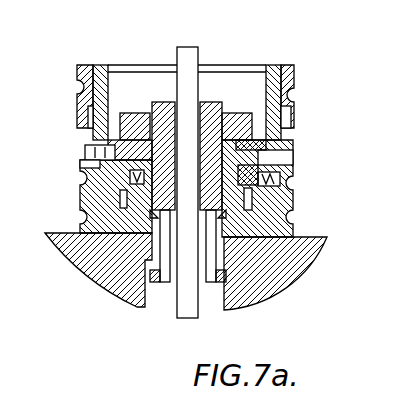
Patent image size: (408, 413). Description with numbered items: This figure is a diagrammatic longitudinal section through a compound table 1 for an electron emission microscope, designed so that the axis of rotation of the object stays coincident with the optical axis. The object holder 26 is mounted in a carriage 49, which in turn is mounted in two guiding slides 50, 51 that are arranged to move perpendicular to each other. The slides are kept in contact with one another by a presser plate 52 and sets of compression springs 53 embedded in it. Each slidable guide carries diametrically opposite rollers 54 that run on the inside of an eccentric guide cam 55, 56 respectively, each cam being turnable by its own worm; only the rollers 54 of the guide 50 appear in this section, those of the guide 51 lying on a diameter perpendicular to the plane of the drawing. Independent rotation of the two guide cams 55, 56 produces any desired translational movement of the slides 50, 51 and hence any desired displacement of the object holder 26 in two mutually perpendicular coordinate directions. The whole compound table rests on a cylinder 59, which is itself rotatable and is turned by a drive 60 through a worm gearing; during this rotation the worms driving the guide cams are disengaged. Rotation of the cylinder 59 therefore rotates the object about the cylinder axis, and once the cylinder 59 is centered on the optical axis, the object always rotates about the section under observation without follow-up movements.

The rotor body 1 is at (75, 262).
The object holder 26 is at (190, 300).
The carriage 49 is at (163, 104).
The guiding slide 50 is at (265, 143).
The guiding slide 51 is at (237, 120).
The presser plate 52 is at (250, 187).
The compression springs 53 is at (259, 180).
The rollers 54 is at (90, 153).
The eccentric guide cam 55 is at (80, 168).
The eccentric guide cam 56 is at (290, 111).
The cylinder 59 is at (110, 86).
The drive 60 is at (295, 211).